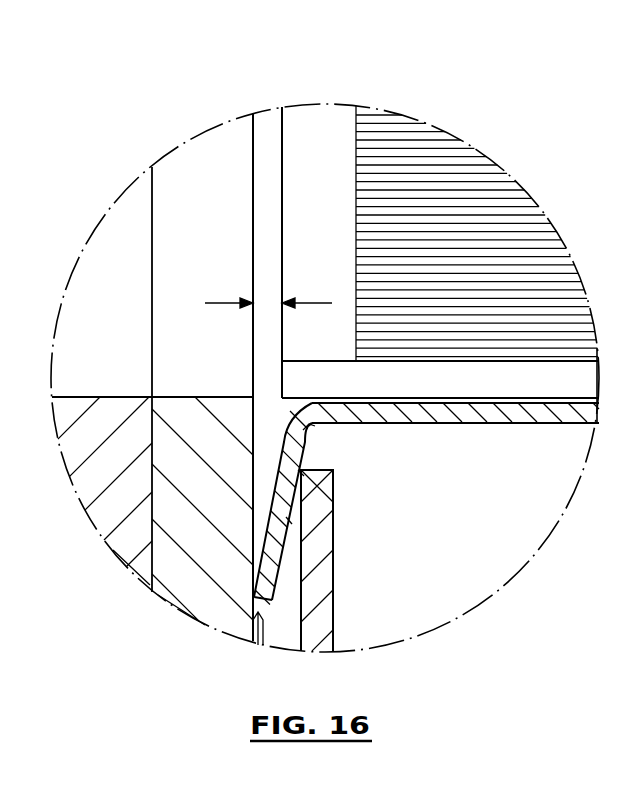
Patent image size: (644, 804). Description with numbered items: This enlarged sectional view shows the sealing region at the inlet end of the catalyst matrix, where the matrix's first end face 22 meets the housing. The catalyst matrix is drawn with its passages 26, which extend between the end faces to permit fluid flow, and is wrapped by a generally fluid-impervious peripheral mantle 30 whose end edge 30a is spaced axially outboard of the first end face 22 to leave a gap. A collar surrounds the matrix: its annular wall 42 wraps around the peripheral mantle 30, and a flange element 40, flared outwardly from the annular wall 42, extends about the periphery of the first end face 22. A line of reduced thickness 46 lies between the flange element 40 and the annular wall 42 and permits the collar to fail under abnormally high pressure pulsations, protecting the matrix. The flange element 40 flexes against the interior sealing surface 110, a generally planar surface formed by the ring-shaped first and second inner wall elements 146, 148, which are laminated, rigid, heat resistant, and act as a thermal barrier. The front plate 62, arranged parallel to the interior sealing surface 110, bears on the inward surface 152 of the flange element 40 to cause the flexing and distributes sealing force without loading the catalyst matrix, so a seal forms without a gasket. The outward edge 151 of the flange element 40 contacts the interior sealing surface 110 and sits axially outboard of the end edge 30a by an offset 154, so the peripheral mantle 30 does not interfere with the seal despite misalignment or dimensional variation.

The first end face 22 is at (346, 188).
The passages 26 is at (440, 193).
The peripheral mantle 30 is at (556, 382).
The end edge 30a is at (282, 368).
The offset 154 is at (228, 306).
The first inner wall element 146 is at (120, 534).
The second inner wall element 148 is at (183, 583).
The outward edge 151 is at (255, 622).
The annular wall 42 is at (503, 417).
The line of reduced thickness 46 is at (310, 433).
The flange element 40 is at (300, 543).
The interior sealing surface 110 is at (302, 477).
The inward surface 152 is at (290, 521).
The front plate 62 is at (322, 577).